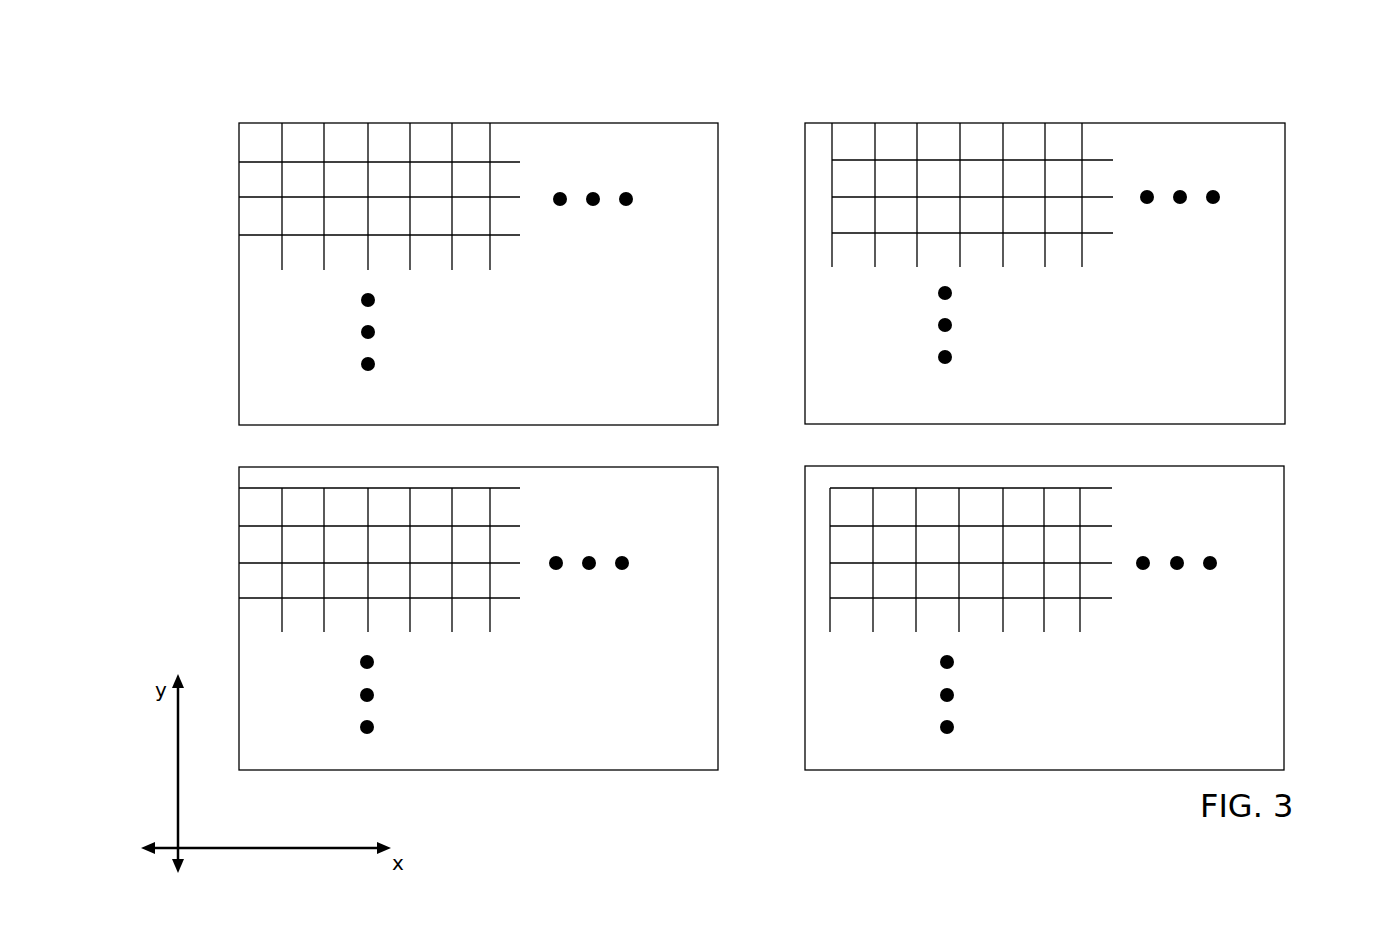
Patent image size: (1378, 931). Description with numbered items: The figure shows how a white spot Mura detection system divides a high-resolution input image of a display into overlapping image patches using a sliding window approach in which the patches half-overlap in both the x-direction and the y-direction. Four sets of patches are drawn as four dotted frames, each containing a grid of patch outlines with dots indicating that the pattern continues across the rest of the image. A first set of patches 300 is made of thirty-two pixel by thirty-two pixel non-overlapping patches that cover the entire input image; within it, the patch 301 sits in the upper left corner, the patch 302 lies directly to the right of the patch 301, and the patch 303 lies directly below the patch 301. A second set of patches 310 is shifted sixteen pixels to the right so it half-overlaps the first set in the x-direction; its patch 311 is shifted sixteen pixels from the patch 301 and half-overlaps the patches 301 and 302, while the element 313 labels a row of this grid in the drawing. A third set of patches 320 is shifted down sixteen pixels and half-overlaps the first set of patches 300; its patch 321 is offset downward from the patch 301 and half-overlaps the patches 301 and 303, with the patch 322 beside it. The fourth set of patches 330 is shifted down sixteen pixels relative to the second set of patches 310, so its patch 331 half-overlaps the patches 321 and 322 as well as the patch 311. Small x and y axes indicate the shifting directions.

The first set of patches 300 is at (431, 222).
The patch 301 is at (257, 128).
The patch 302 is at (302, 128).
The patch 303 is at (253, 180).
The second set of patches 310 is at (1052, 221).
The patch 311 is at (845, 128).
The row of pixel grid (second frame) 313 is at (847, 177).
The third set of patches 320 is at (436, 580).
The patch 321 is at (258, 503).
The patch 322 is at (302, 503).
The fourth set of patches 330 is at (1084, 582).
The patch 331 is at (843, 503).